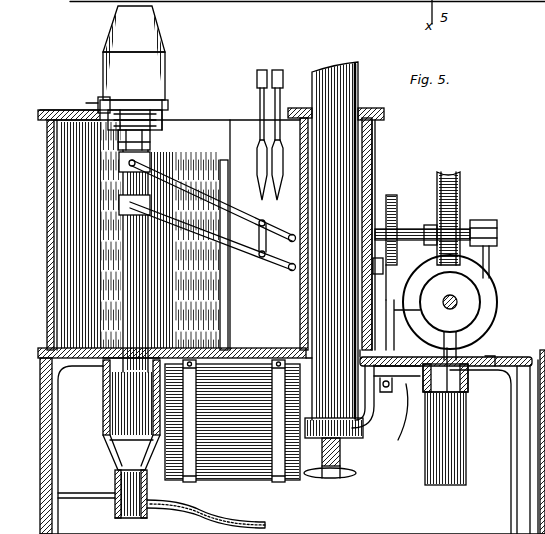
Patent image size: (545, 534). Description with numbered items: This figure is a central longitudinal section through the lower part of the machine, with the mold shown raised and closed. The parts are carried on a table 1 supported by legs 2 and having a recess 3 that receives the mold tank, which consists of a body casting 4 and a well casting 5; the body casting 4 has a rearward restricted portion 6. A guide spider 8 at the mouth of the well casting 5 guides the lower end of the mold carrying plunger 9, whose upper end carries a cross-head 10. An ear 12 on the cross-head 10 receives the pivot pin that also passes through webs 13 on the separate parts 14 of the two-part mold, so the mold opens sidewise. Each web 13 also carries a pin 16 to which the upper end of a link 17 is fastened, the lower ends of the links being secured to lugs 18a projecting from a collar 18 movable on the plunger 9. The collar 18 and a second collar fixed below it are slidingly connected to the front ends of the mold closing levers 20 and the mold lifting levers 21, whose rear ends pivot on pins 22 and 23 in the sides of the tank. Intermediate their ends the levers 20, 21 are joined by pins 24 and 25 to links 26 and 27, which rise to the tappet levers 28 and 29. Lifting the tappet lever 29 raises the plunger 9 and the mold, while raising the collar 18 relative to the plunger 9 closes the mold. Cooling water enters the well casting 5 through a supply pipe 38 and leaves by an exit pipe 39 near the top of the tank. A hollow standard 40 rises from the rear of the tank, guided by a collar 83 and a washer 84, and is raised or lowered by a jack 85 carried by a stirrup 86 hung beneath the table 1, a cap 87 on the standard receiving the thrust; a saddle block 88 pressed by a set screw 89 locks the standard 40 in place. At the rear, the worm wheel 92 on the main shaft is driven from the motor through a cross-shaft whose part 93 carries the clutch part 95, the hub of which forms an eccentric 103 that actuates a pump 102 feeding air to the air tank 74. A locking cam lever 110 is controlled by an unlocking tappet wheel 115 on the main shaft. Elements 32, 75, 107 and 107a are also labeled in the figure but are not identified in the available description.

The table 1 is at (518, 362).
The legs 2 is at (55, 476).
The recess 3 is at (380, 380).
The body casting 4 is at (106, 278).
The well casting 5 is at (102, 412).
The rearward restricted portion 6 is at (367, 163).
The guide spider 8 is at (106, 374).
The mold carrying plunger 9 is at (136, 294).
The cross-head 10 is at (150, 146).
The ear 12 is at (150, 116).
The webs 13 is at (104, 108).
The separate parts of two-part mold 14 is at (163, 42).
The pin 16 is at (164, 104).
The link 17 is at (162, 126).
The collar 18 is at (120, 170).
The lugs 18a is at (126, 156).
The mold closing levers 20 is at (186, 182).
The mold lifting levers 21 is at (205, 228).
The pin 22 is at (296, 239).
The pin 23 is at (296, 268).
The pin 24 is at (260, 228).
The pin 25 is at (263, 259).
The link 26 is at (258, 184).
The link 27 is at (280, 188).
The tappet lever 28 is at (259, 76).
The mold lifting tappet lever 29 is at (282, 76).
The bearing block 32 is at (497, 238).
The supply pipe 38 is at (178, 504).
The exit pipe 39 is at (231, 172).
The standard 40 is at (366, 80).
The air tank 74 is at (244, 478).
The cover plate 75 is at (100, 117).
The collar 83 is at (373, 108).
The washer 84 is at (372, 346).
The jack 85 is at (352, 476).
The stirrup 86 is at (342, 452).
The cap 87 is at (366, 424).
The saddle block 88 is at (358, 292).
The set screw 89 is at (384, 266).
The worm wheel 92 is at (466, 182).
The cross-shaft part 93 is at (456, 300).
The clutch part 95 is at (482, 328).
The pump 102 is at (468, 410).
The eccentric 103 is at (470, 312).
The pipe 107 is at (405, 421).
The pipe 107a is at (80, 493).
The second cam lever 110 is at (394, 302).
The unlocking tappet wheel 115 is at (396, 200).